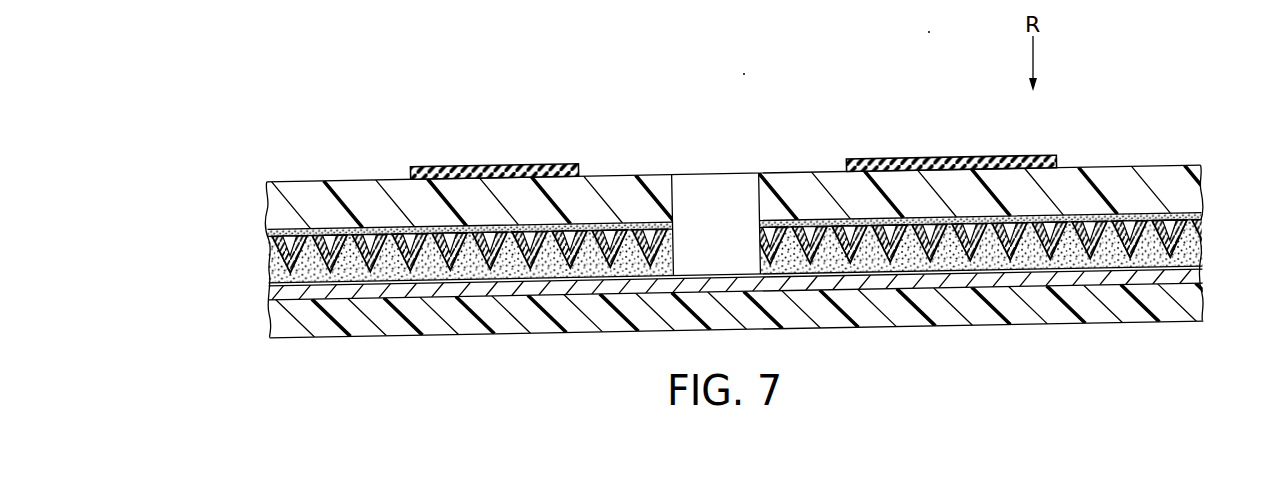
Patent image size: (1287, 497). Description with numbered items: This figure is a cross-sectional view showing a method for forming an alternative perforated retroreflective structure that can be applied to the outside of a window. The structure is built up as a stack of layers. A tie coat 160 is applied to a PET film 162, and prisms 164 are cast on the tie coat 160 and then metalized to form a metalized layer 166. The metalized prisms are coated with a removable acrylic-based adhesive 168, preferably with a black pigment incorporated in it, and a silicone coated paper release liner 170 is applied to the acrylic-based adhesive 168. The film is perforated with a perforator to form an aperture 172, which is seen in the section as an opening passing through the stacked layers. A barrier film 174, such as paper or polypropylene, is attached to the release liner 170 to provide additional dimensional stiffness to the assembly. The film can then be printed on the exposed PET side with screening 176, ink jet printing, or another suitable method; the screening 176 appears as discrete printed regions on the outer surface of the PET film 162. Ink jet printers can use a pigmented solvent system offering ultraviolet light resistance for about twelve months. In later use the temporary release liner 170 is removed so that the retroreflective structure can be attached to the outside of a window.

The tie coat 160 is at (1203, 216).
The PET film 162 is at (1203, 191).
The prisms 164 is at (268, 249).
The metalized layer 166 is at (268, 268).
The acrylic-based adhesive 168 is at (1200, 259).
The release liner 170 is at (266, 293).
The aperture 172 is at (735, 192).
The barrier film 174 is at (1170, 322).
The screening 176 is at (512, 166).